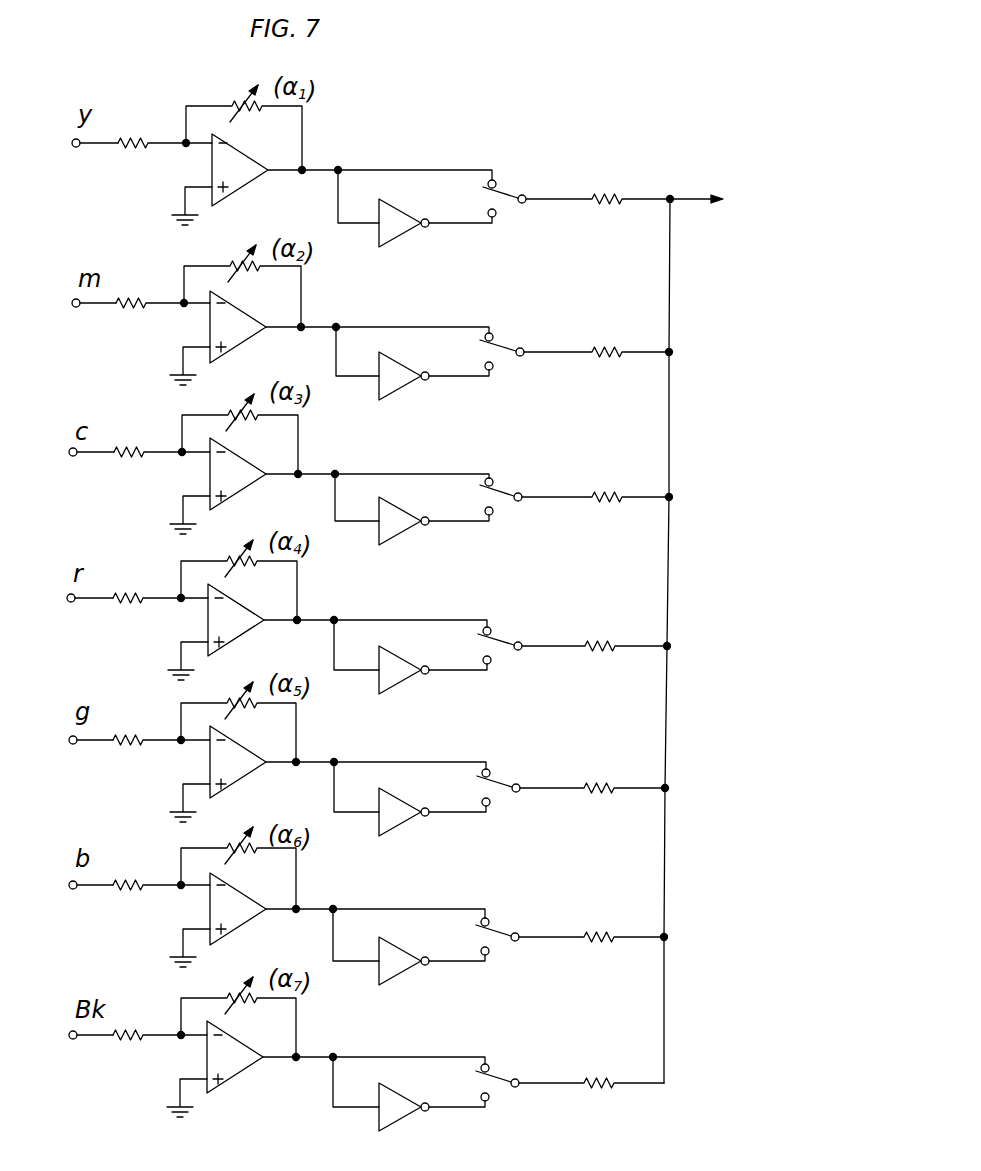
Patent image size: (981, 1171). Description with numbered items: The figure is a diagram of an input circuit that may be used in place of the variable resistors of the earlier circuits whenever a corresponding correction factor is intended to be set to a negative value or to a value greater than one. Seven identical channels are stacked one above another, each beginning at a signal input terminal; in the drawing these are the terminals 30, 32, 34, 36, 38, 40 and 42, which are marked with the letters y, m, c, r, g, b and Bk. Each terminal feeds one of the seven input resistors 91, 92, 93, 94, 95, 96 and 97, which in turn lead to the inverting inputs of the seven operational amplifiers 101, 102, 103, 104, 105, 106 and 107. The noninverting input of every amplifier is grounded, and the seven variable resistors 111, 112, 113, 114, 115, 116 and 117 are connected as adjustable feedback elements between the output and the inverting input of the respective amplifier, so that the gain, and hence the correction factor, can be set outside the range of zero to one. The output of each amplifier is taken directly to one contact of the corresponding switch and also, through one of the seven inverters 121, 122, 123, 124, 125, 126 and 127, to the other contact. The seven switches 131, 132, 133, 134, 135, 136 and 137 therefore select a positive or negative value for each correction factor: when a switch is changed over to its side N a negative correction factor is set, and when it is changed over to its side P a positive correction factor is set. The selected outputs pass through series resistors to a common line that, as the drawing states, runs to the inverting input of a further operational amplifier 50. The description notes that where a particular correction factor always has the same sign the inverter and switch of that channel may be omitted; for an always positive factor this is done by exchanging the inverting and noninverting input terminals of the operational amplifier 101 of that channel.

The yellow signal input terminal 30 is at (74, 148).
The magenta signal input terminal 32 is at (74, 308).
The cyan signal input terminal 34 is at (71, 457).
The red signal input terminal 36 is at (69, 603).
The green signal input terminal 38 is at (71, 745).
The blue signal input terminal 40 is at (71, 890).
The black signal input terminal 42 is at (71, 1040).
The input resistor 91 is at (131, 135).
The input resistor 92 is at (129, 299).
The input resistor 93 is at (127, 448).
The input resistor 94 is at (126, 594).
The input resistor 95 is at (126, 736).
The input resistor 96 is at (126, 881).
The input resistor 97 is at (126, 1031).
The operational amplifier 101 is at (240, 186).
The operational amplifier 102 is at (238, 343).
The operational amplifier 103 is at (238, 490).
The operational amplifier 104 is at (236, 636).
The operational amplifier 105 is at (238, 778).
The operational amplifier 106 is at (238, 925).
The operational amplifier 107 is at (235, 1073).
The variable resistor 111 is at (244, 127).
The variable resistor 112 is at (242, 286).
The variable resistor 113 is at (240, 434).
The variable resistor 114 is at (239, 580).
The variable resistor 115 is at (238, 722).
The variable resistor 116 is at (238, 868).
The variable resistor 117 is at (238, 1017).
The inverter 121 is at (408, 210).
The inverter 122 is at (408, 366).
The inverter 123 is at (408, 511).
The inverter 124 is at (408, 660).
The inverter 125 is at (408, 802).
The inverter 126 is at (408, 951).
The inverter 127 is at (408, 1097).
The switch 131 is at (512, 192).
The switch 132 is at (512, 346).
The switch 133 is at (512, 491).
The switch 134 is at (512, 640).
The switch 135 is at (512, 782).
The switch 136 is at (512, 931).
The switch 137 is at (512, 1077).
The summing operational amplifier (inverting input bus) 50 is at (680, 593).